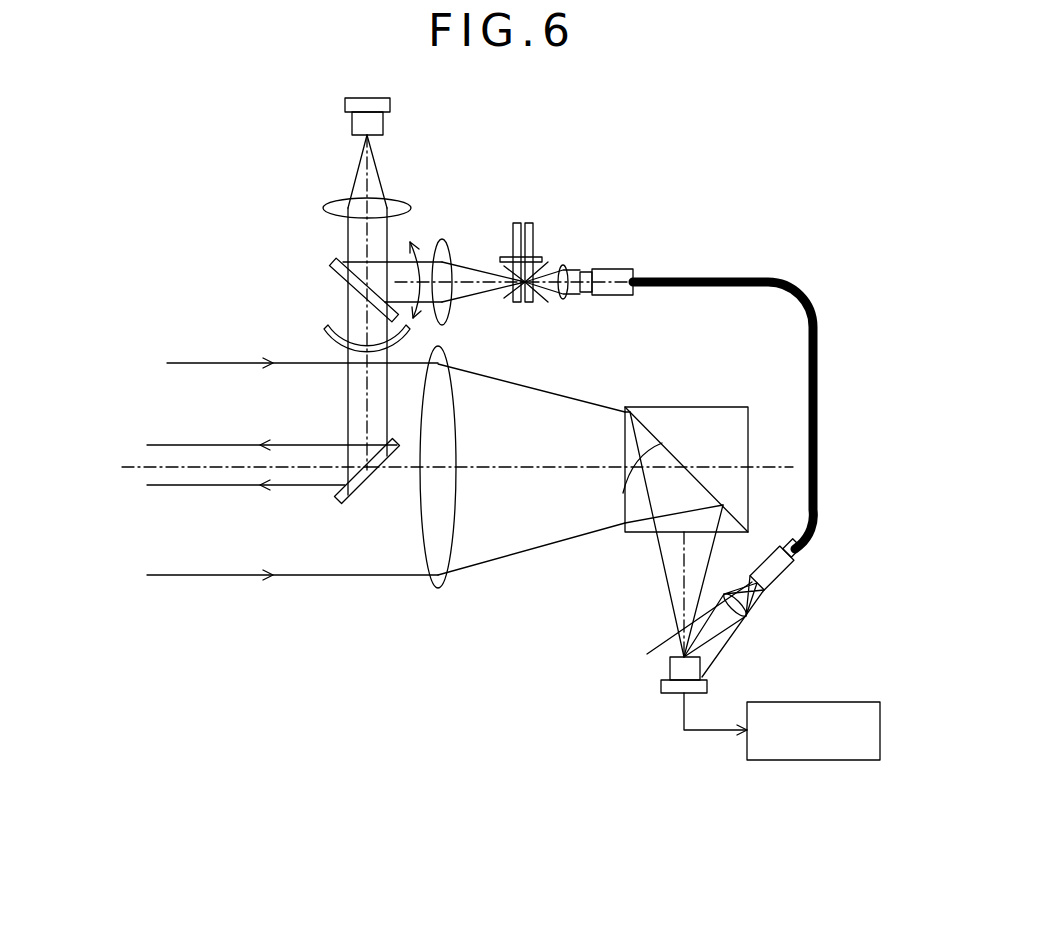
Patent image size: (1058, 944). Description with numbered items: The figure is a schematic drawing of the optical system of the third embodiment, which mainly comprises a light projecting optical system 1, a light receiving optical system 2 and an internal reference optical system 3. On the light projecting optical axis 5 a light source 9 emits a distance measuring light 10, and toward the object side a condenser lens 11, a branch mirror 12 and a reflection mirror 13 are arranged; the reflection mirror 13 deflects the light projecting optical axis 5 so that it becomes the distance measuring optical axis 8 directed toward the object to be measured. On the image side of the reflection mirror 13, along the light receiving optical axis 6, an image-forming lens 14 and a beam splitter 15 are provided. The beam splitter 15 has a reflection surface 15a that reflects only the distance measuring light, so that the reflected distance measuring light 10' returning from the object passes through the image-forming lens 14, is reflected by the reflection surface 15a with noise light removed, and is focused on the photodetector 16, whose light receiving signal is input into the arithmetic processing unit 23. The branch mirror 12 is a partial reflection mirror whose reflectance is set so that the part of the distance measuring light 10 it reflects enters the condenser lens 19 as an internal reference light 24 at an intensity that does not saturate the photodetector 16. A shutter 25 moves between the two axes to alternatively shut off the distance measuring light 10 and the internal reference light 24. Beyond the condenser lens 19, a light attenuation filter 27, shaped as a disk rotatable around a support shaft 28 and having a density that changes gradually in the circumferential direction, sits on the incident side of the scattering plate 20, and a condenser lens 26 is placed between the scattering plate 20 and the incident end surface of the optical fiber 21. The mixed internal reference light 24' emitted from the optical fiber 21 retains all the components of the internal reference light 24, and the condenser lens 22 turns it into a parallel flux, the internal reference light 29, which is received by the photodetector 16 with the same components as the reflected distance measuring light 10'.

The light projecting optical system 1 is at (310, 233).
The light receiving optical system 2 is at (542, 568).
The internal reference optical system 3 is at (715, 247).
The light projecting optical axis 5 is at (368, 178).
The light receiving optical axis 6 is at (512, 465).
The distance measuring optical axis 8 is at (180, 465).
The light source 9 is at (383, 122).
The distance measuring light 10 is at (279, 326).
The reflected distance measuring light 10' is at (281, 600).
The condenser lens 11 is at (408, 205).
The branch mirror 12 is at (333, 263).
The reflection mirror 13 is at (358, 490).
The image-forming lens 14 is at (452, 540).
The beam splitter 15 is at (697, 405).
The reflection surface 15a is at (623, 495).
The photodetector 16 is at (668, 666).
The condenser lens 19 is at (444, 243).
The scattering plate 20 is at (540, 228).
The optical fiber 21 is at (772, 277).
The condenser lens 22 is at (748, 616).
The arithmetic processing unit 23 is at (766, 760).
The internal reference light 24 is at (495, 312).
The internal reference light 24' is at (800, 596).
The shutter 25 is at (328, 338).
The condenser lens 26 is at (566, 300).
The light attenuation filter 27 is at (502, 256).
The support shaft 28 is at (536, 265).
The internal reference light 29 is at (720, 652).